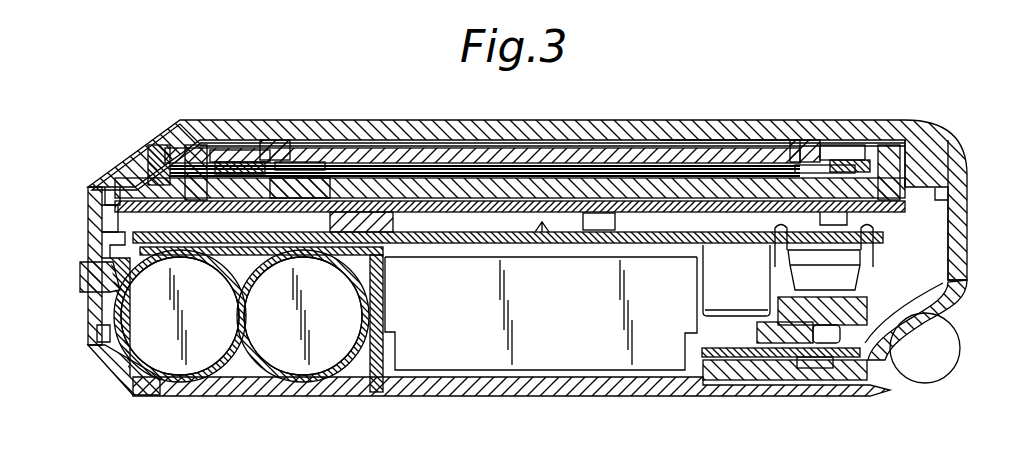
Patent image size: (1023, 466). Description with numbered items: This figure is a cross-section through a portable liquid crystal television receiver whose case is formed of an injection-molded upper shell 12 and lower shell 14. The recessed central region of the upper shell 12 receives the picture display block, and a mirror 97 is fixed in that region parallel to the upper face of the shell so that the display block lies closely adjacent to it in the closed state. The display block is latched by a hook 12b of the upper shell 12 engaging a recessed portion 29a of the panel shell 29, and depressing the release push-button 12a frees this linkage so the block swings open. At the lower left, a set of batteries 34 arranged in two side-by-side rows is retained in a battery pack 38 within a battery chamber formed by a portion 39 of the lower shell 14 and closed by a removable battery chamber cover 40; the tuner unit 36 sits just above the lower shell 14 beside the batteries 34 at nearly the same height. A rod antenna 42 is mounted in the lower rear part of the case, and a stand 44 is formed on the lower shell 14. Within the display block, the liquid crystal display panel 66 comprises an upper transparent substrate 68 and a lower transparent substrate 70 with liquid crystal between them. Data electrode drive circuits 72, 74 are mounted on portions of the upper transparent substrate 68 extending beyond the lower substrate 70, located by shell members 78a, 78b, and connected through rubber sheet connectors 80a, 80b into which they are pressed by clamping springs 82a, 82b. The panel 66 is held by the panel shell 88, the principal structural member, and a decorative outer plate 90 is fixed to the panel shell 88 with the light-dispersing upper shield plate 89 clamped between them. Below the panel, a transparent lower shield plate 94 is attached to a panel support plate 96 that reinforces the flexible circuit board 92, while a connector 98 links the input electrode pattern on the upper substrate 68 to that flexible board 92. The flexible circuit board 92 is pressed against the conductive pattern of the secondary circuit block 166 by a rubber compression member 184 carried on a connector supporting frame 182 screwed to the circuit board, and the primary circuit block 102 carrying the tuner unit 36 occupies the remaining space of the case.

The upper shell 12 is at (863, 221).
The release push-button 12a is at (83, 267).
The hook 12b is at (88, 220).
The lower shell 14 is at (477, 387).
The panel shell 29 is at (190, 126).
The recessed portion 29a is at (88, 232).
The batteries 34 is at (167, 373).
The tuner unit 36 is at (422, 363).
The battery pack 38 is at (107, 357).
The portion of lower shell 39 is at (367, 367).
The battery chamber cover 40 is at (245, 385).
The rod antenna 42 is at (935, 348).
The stand 44 is at (790, 393).
The liquid crystal display panel 66 is at (463, 143).
The upper transparent substrate 68 is at (663, 147).
The lower transparent substrate 70 is at (511, 160).
The data electrode drive circuit 72 is at (848, 163).
The data electrode drive circuit 74 is at (221, 152).
The shell member 78a is at (808, 157).
The shell member 78b is at (300, 143).
The connector 80a is at (824, 163).
The connector 80b is at (262, 147).
The clamping spring 82a is at (888, 148).
The clamping spring 82b is at (200, 147).
The panel shell 88 is at (957, 151).
The upper shield plate 89 is at (575, 130).
The decorative outer plate 90 is at (87, 187).
The flexible circuit board 92 is at (930, 300).
The lower shield plate 94 is at (609, 182).
The panel support plate 96 is at (123, 170).
The mirror 97 is at (457, 212).
The connector for output of data signals 98 is at (147, 148).
The primary circuit block 102 is at (950, 283).
The secondary circuit block 166 is at (700, 360).
The connector supporting frame 182 is at (767, 340).
The rubber compression member 184 is at (833, 340).